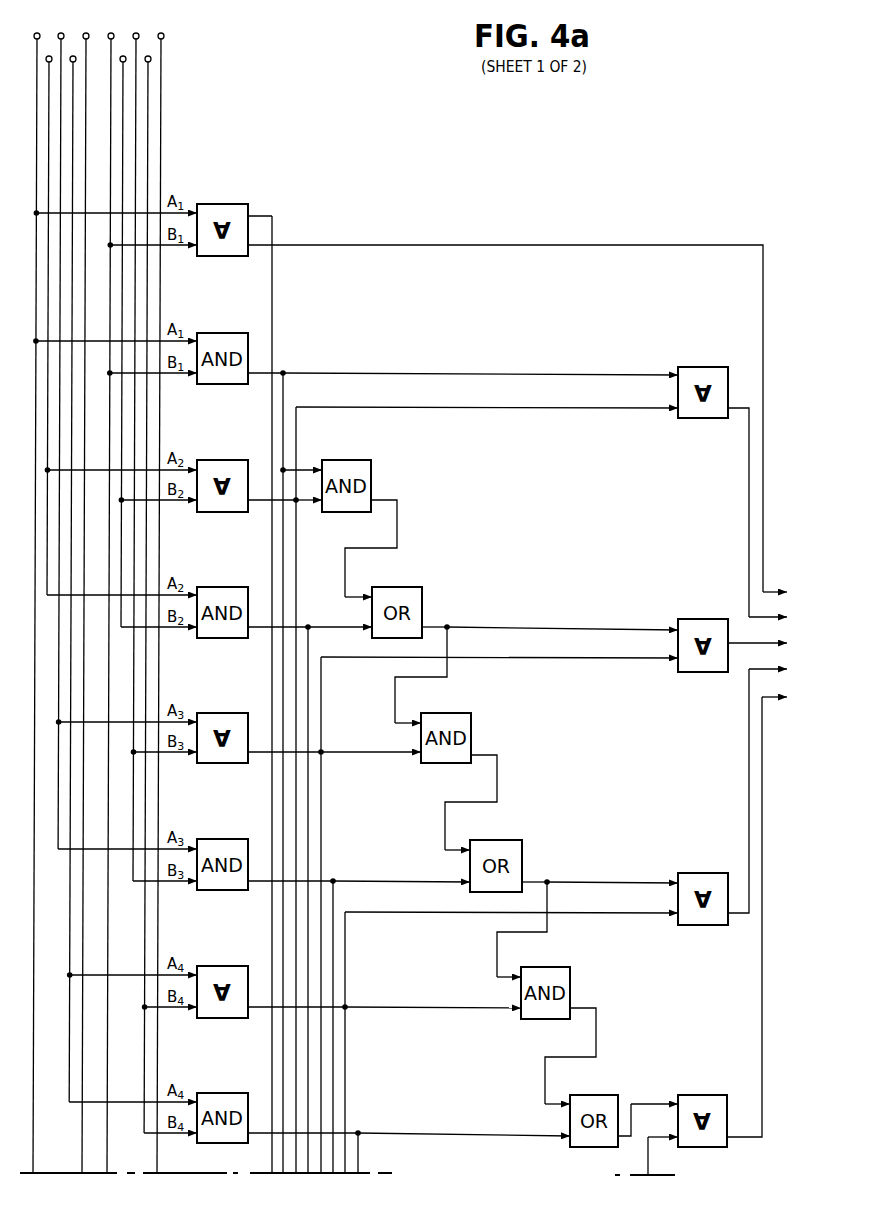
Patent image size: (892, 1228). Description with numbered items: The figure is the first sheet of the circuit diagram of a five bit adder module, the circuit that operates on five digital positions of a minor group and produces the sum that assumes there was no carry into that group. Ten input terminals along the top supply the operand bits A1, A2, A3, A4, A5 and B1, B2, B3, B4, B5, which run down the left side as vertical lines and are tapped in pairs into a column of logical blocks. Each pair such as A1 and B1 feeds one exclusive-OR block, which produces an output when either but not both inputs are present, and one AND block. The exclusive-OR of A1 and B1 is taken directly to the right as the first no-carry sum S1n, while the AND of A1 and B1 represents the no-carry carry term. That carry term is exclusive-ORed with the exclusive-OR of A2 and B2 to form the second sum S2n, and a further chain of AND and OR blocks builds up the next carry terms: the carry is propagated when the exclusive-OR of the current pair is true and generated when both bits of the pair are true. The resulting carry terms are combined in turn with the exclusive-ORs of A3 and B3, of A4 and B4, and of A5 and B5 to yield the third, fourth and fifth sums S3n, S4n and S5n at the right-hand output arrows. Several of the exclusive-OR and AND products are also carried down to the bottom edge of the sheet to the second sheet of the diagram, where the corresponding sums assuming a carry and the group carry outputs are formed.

The first digital position input A A1 is at (36, 593).
The second digital position input A A2 is at (48, 316).
The third digital position input A A3 is at (60, 431).
The fourth digital position input A A4 is at (72, 569).
The fifth digital position input A A5 is at (84, 593).
The first digital position input B B1 is at (111, 593).
The second digital position input B B2 is at (122, 332).
The third digital position input B B3 is at (136, 447).
The fourth digital position input B B4 is at (147, 585).
The fifth digital position input B B5 is at (160, 593).
The first no-carry sum output S1n is at (520, 418).
The second no-carry sum output S2n is at (757, 512).
The third no-carry sum output S3n is at (757, 632).
The fourth no-carry sum output S4n is at (757, 780).
The fifth no-carry sum output S5n is at (757, 906).